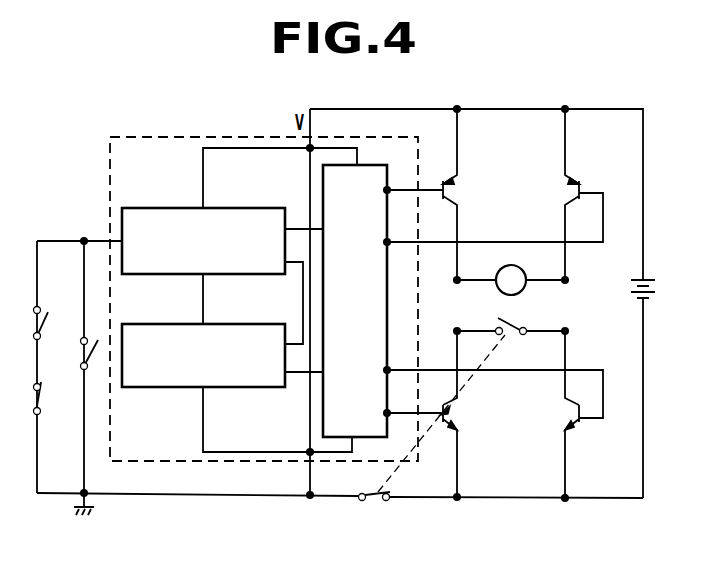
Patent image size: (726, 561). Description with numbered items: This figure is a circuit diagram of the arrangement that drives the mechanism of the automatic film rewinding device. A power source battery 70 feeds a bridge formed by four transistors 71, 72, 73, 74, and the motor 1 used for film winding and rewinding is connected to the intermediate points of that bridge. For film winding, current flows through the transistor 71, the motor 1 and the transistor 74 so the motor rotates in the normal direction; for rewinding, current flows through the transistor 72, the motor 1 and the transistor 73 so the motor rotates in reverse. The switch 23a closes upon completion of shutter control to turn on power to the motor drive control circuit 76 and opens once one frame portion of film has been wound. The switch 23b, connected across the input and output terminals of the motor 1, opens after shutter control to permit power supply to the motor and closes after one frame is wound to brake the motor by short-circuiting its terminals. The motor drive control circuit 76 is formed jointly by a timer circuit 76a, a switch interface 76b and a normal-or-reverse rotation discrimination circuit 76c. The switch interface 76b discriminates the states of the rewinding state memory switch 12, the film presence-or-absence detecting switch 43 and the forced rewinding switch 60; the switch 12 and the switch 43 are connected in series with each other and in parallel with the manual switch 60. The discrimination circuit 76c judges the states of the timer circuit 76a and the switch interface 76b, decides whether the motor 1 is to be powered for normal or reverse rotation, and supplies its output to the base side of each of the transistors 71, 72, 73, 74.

The motor 1 is at (527, 266).
The rewinding state memory switch 12 is at (44, 323).
The switch 23a is at (375, 503).
The switch 23b is at (512, 337).
The film presence-or-absence detecting switch 43 is at (40, 402).
The forced rewinding switch 60 is at (81, 349).
The power source battery 70 is at (627, 287).
The transistor 71 is at (450, 192).
The transistor 72 is at (573, 192).
The transistor 73 is at (450, 415).
The transistor 74 is at (570, 417).
The motor drive control circuit 76 is at (387, 136).
The timer circuit 76a is at (213, 324).
The switch interface 76b is at (230, 208).
The normal-or-reverse rotation discrimination circuit 76c is at (373, 165).